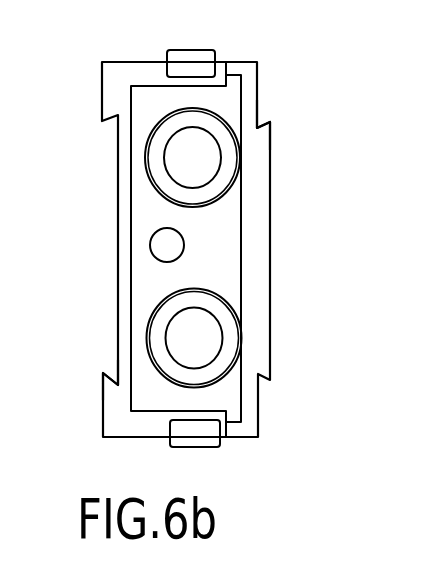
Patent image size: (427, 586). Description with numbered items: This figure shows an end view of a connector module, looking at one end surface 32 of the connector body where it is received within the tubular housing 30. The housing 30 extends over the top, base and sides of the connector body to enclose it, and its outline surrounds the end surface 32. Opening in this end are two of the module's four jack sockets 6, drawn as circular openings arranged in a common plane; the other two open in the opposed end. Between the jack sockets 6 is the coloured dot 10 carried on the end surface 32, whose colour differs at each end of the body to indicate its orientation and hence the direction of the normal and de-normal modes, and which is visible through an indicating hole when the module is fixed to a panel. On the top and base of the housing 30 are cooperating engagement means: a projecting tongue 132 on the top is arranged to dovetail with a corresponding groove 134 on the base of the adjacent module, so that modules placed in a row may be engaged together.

The tubular housing 30 is at (113, 72).
The end surface 32 is at (142, 122).
The coloured dot 10 is at (150, 245).
The jack socket 6 is at (152, 339).
The projecting tongue 132 is at (270, 122).
The groove 134 is at (103, 374).